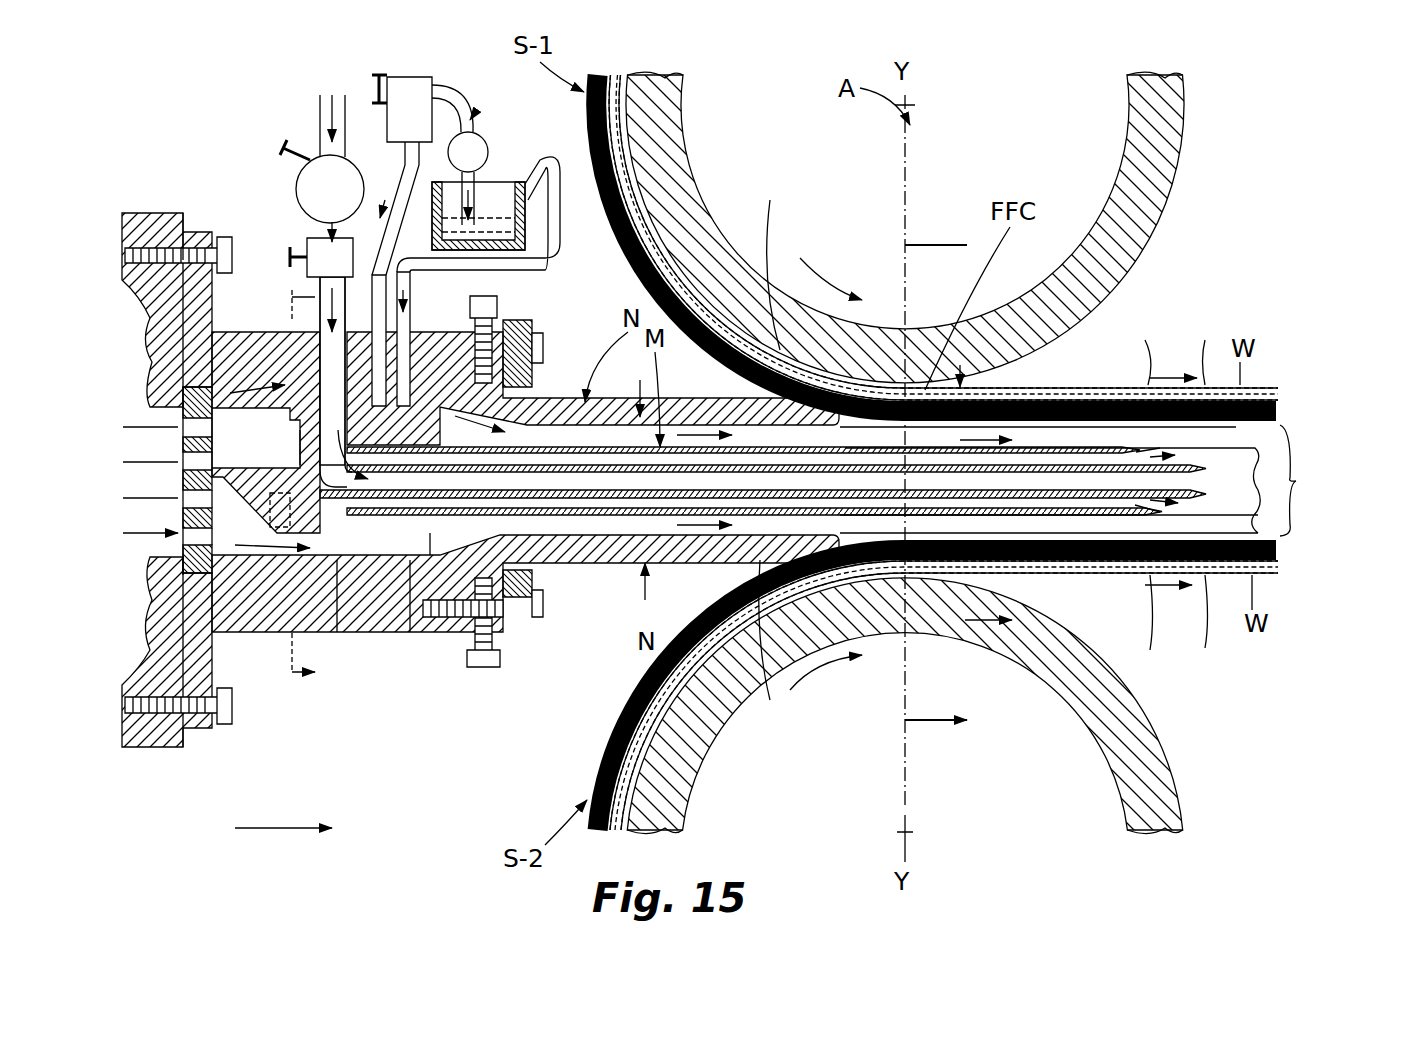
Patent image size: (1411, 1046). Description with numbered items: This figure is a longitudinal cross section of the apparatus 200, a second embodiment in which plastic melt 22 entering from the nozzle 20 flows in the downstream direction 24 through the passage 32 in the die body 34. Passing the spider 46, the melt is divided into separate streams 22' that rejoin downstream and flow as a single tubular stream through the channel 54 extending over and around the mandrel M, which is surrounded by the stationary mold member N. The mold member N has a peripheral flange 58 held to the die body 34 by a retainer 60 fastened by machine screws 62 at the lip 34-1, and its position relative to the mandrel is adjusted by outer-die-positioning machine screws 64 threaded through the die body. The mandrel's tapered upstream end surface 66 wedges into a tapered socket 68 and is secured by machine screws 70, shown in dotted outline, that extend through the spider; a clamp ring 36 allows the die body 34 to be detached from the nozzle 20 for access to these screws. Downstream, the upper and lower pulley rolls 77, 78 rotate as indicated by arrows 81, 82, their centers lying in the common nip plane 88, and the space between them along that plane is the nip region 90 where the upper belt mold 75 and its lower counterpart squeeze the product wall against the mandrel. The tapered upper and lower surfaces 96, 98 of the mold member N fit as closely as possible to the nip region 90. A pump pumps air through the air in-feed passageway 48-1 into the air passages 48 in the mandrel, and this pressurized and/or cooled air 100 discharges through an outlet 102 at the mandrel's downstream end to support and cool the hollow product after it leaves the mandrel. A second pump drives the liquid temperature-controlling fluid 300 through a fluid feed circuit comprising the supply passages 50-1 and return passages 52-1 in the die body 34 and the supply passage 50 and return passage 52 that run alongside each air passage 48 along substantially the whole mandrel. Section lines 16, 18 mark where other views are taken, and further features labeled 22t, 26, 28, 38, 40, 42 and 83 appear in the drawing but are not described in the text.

The apparatus 200 is at (225, 77).
The section line 16 is at (283, 487).
The section line 18 is at (955, 483).
The nozzle 20 is at (155, 282).
The plastic melt 22 is at (131, 477).
The split streams 22' is at (910, 243).
The web top layers 22t is at (1040, 400).
The downstream direction 24 is at (283, 860).
The lower inlet 26 is at (150, 557).
The inlet port 28 is at (131, 457).
The passage 32 is at (337, 633).
The die body 34 is at (300, 385).
The lip 34-1 is at (532, 325).
The clamp ring 36 is at (160, 213).
The bolt 38 is at (222, 237).
The mounting plate 40 is at (190, 310).
The seal 42 is at (183, 386).
The spider 46 is at (227, 470).
The air passages 48 is at (640, 447).
The air in-feed passageway 48-1 is at (330, 382).
The liquid supply passage 50 is at (720, 425).
The supply passages 50-1 is at (260, 333).
The return passage 52 is at (610, 563).
The return passages 52-1 is at (400, 380).
The channel 54 is at (618, 465).
The peripheral flange 58 is at (405, 400).
The retainer 60 is at (545, 340).
The machine screws 62 is at (552, 633).
The outer-die-positioning machine screws 64 is at (489, 300).
The upstream end surface 66 is at (430, 633).
The tapered socket 68 is at (410, 633).
The machine screws 70 is at (330, 540).
The upper belt mold 75 is at (1208, 489).
The upper pulley roll 77 is at (1148, 264).
The lower pulley roll 78 is at (1168, 747).
The arrow 81 is at (829, 263).
The arrow 82 is at (805, 670).
The coating 83 is at (1155, 489).
The nip plane 88 is at (915, 128).
The nip region 90 is at (945, 388).
The upper tapered surface 96 is at (763, 262).
The lower tapered surface 98 is at (760, 705).
The pressurized and/or cooled air 100 is at (1262, 445).
The outlets 102 is at (1262, 513).
The liquid temperature-controlling fluid 300 is at (490, 200).